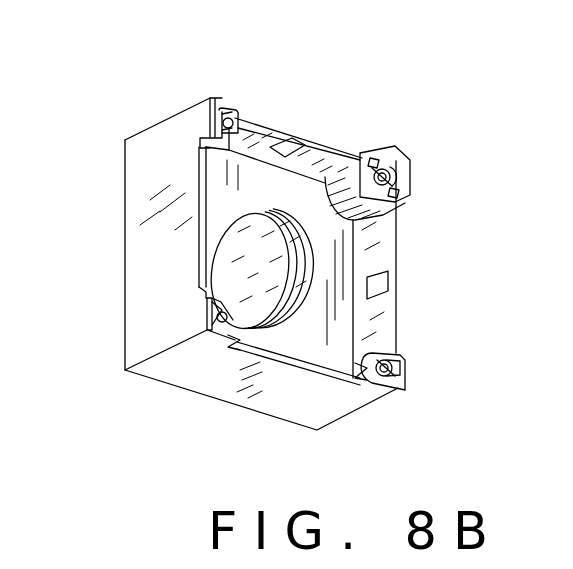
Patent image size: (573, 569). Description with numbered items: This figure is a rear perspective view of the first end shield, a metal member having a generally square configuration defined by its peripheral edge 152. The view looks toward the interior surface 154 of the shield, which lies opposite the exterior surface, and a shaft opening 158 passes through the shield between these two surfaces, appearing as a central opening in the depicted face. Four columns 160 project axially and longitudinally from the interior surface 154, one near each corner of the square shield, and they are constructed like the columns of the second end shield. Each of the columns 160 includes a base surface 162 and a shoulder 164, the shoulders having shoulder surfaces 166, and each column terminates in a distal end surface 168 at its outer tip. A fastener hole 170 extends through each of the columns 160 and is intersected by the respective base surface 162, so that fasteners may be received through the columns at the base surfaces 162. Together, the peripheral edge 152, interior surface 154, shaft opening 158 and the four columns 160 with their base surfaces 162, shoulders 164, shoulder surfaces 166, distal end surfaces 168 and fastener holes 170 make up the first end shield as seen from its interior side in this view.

The peripheral edge 152 is at (155, 150).
The interior surface 154 is at (345, 273).
The shaft opening 158 is at (232, 276).
The columns 160 is at (195, 117).
The base surfaces 162 is at (212, 148).
The shoulders 164 is at (222, 100).
The shoulder surfaces 166 is at (262, 125).
The distal end surfaces 168 is at (213, 100).
The fastener hole 170 is at (233, 110).